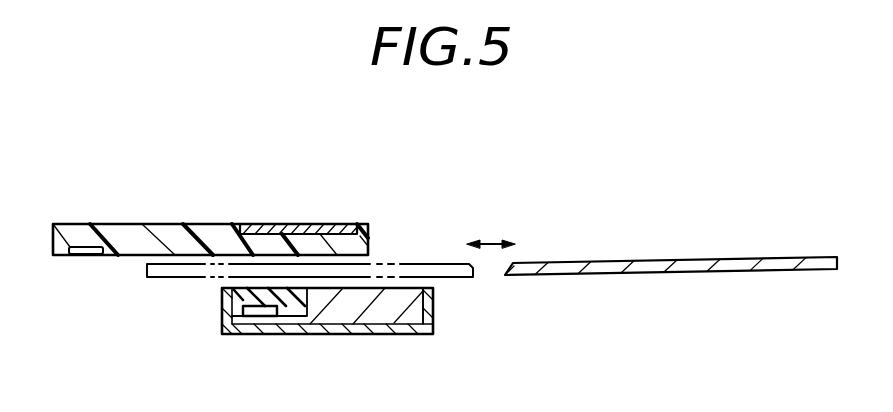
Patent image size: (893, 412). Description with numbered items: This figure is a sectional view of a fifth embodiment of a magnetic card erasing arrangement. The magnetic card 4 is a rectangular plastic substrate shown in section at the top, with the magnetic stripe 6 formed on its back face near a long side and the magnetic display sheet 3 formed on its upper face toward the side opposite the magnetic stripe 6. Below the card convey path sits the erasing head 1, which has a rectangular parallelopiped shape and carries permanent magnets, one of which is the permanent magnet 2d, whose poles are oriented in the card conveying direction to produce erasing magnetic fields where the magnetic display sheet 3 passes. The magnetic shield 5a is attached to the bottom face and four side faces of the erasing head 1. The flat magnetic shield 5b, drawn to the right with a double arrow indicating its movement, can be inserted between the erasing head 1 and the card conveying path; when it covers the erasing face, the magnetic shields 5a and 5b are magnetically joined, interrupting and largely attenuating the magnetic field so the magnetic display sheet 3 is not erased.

The erasing head 1 is at (373, 316).
The permanent magnet 2d is at (270, 316).
The magnetic display sheet 3 is at (303, 227).
The magnetic card 4 is at (163, 232).
The magnetic shield 5a is at (428, 310).
The flat magnetic shield 5b is at (740, 262).
The magnetic stripe 6 is at (88, 257).